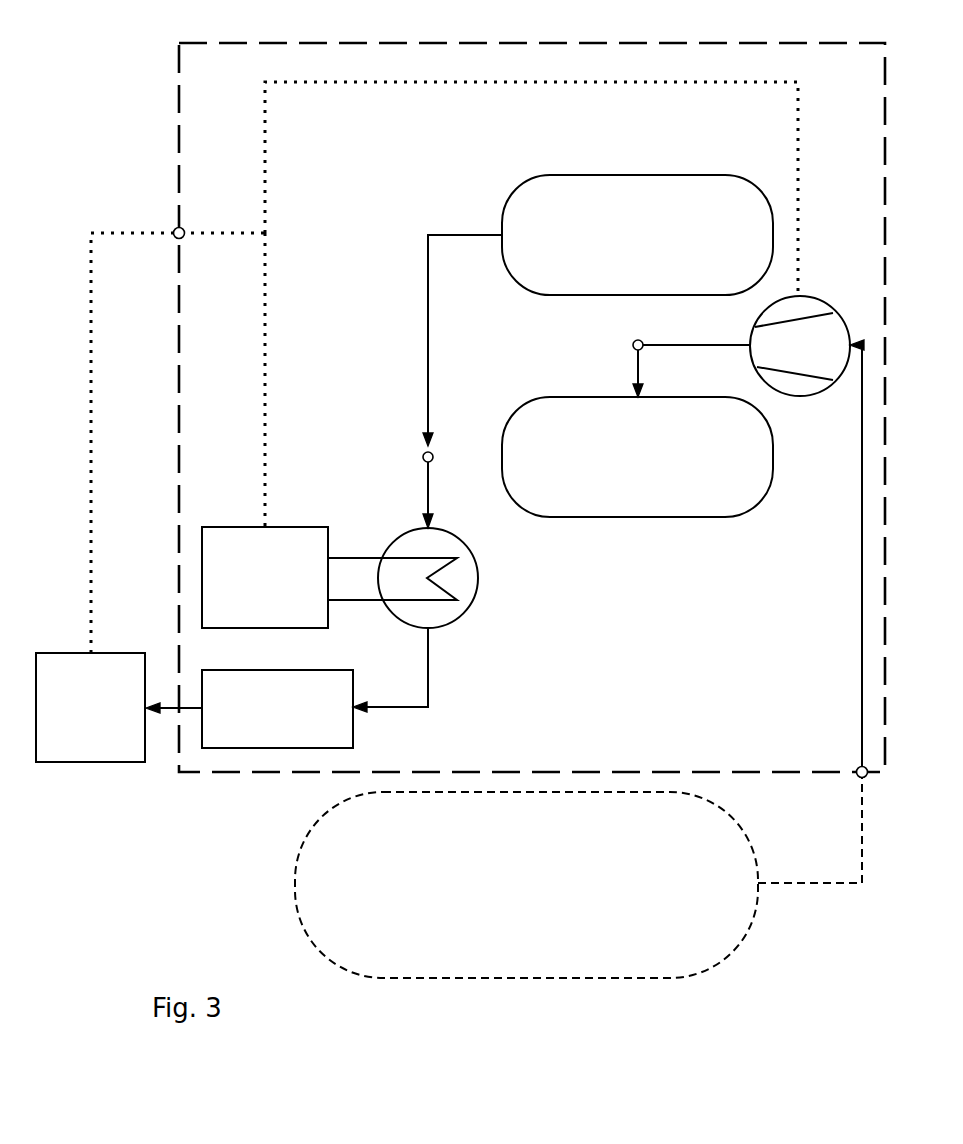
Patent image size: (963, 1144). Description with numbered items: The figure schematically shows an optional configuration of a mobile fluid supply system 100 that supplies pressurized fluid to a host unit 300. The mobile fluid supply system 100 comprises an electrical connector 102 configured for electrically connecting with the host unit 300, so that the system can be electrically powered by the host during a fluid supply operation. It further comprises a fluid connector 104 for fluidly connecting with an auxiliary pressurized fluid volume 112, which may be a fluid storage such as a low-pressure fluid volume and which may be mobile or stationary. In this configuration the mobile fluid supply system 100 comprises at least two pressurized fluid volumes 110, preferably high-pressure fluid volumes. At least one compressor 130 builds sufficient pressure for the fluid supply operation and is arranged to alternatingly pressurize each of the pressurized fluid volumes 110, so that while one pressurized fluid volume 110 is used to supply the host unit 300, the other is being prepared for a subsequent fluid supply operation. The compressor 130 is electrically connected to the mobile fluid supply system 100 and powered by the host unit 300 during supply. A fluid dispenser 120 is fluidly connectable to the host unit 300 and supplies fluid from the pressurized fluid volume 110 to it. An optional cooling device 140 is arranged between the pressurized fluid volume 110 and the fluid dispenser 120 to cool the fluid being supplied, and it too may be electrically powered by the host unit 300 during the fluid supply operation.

The mobile fluid supply system 100 is at (178, 115).
The electrical connector 102 is at (174, 232).
The fluid connector 104 is at (860, 765).
The pressurized fluid volume 110 is at (658, 249).
The auxiliary pressurized fluid volume 112 is at (555, 901).
The fluid dispenser 120 is at (287, 710).
The compressor 130 is at (802, 343).
The cooling device 140 is at (352, 515).
The host unit 300 is at (113, 727).